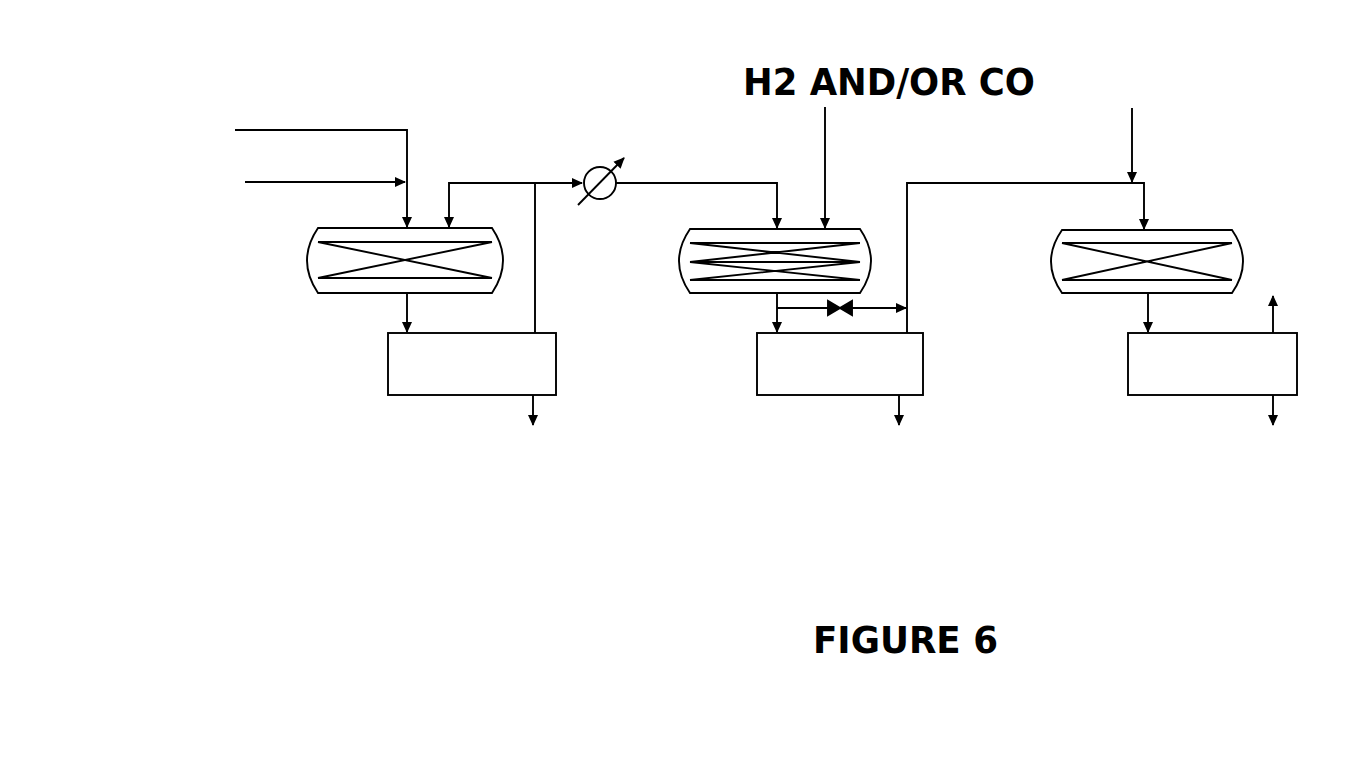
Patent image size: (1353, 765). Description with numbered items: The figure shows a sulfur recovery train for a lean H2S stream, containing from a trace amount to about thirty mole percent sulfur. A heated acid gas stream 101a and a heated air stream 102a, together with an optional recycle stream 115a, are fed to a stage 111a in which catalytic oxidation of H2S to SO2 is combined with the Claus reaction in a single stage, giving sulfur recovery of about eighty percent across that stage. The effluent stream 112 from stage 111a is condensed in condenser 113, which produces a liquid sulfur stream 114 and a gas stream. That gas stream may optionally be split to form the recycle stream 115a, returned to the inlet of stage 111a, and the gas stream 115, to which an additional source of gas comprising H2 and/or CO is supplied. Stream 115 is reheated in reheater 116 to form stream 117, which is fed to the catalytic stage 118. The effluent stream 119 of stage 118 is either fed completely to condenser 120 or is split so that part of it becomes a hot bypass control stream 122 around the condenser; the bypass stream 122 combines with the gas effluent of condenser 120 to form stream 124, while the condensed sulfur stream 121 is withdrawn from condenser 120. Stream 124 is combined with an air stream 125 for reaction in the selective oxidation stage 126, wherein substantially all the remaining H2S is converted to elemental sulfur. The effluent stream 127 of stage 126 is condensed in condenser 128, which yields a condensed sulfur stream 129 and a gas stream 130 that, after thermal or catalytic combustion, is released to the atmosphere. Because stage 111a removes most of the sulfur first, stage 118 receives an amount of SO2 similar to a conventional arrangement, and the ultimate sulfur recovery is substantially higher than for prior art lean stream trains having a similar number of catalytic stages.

The heated acid gas stream 101a is at (275, 172).
The heated air stream 102a is at (275, 163).
The catalytic oxidation stage 111a is at (383, 283).
The effluent stream 112 is at (393, 307).
The condenser 113 is at (472, 364).
The liquid sulfur stream 114 is at (539, 435).
The gas stream 115 is at (557, 177).
The recycle stream 115a is at (498, 171).
The reheater 116 is at (622, 161).
The reheated stream 117 is at (696, 185).
The catalytic stage 118 is at (748, 286).
The effluent stream 119 is at (761, 307).
The condenser 120 is at (840, 364).
The condensed sulfur stream 121 is at (905, 437).
The hot bypass control stream 122 is at (877, 300).
The combined gas stream 124 is at (1025, 236).
The air stream 125 is at (1134, 122).
The selective oxidation stage 126 is at (1154, 239).
The effluent stream 127 is at (1131, 312).
The condenser 128 is at (1212, 364).
The condensed sulfur stream 129 is at (1285, 437).
The gas stream 130 is at (1300, 292).